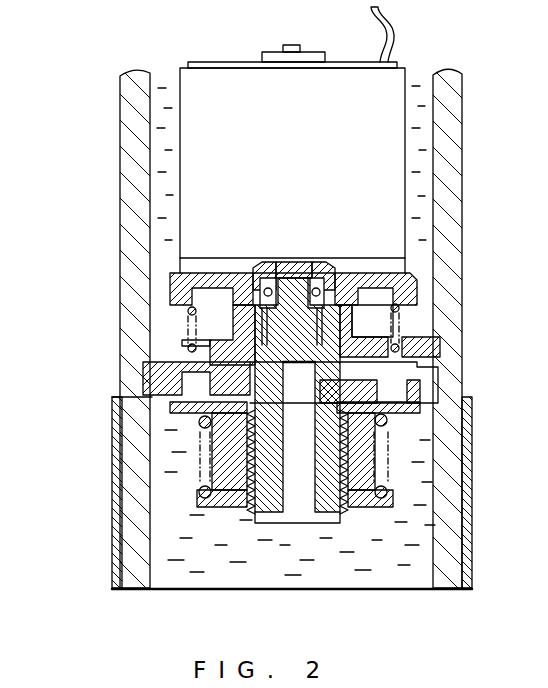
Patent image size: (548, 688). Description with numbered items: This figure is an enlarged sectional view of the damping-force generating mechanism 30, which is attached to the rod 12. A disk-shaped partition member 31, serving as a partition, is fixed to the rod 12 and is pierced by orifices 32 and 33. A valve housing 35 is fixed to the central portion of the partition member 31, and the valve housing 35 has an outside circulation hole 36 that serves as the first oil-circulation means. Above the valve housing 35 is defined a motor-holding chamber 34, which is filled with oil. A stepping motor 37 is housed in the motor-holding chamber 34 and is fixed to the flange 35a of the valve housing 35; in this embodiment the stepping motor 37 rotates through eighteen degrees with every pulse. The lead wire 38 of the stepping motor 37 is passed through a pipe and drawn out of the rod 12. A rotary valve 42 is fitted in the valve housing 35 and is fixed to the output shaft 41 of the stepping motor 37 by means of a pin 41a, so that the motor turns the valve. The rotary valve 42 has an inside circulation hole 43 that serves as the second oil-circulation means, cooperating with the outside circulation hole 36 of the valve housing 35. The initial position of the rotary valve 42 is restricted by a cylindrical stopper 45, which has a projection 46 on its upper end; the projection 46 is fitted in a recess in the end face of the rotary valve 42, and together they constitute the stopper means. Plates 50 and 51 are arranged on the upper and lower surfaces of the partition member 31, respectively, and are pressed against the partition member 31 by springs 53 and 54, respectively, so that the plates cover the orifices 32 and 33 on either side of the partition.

The rod 12 is at (122, 88).
The damping-force generating mechanism 30 is at (162, 540).
The partition member 31 is at (146, 376).
The orifice 32 is at (152, 398).
The orifice 33 is at (402, 358).
The motor-holding chamber 34 is at (438, 216).
The valve housing 35 is at (246, 314).
The flange 35a is at (172, 280).
The outside circulation hole 36 is at (333, 381).
The stepping motor 37 is at (186, 174).
The lead wire 38 is at (372, 14).
The output shaft 41 is at (300, 262).
The pin 41a is at (250, 300).
The rotary valve 42 is at (306, 468).
The inside circulation hole 43 is at (330, 352).
The cylindrical stopper 45 is at (312, 514).
The projection 46 is at (284, 400).
The plate 50 is at (186, 334).
The plate 51 is at (190, 413).
The spring 53 is at (184, 351).
The spring 54 is at (200, 478).